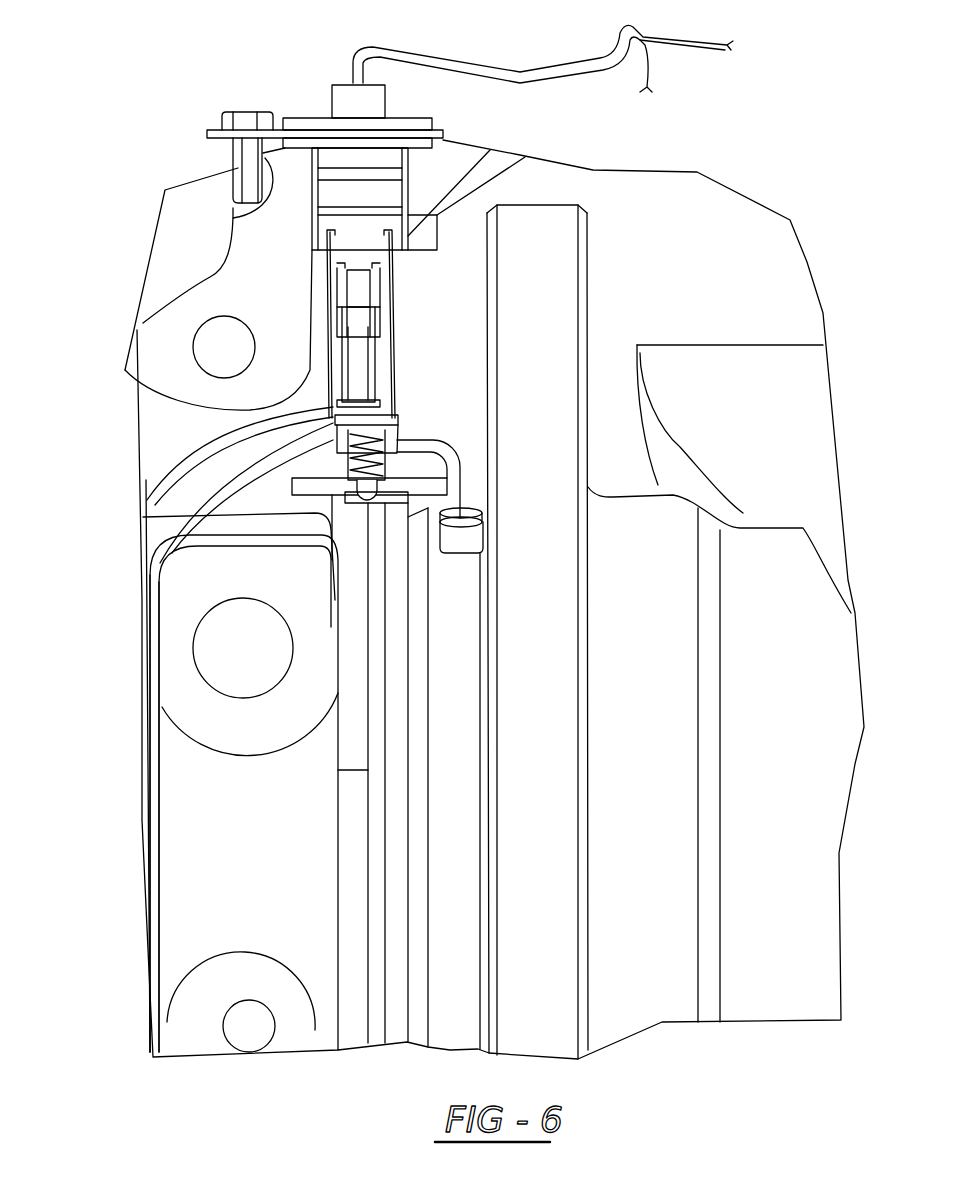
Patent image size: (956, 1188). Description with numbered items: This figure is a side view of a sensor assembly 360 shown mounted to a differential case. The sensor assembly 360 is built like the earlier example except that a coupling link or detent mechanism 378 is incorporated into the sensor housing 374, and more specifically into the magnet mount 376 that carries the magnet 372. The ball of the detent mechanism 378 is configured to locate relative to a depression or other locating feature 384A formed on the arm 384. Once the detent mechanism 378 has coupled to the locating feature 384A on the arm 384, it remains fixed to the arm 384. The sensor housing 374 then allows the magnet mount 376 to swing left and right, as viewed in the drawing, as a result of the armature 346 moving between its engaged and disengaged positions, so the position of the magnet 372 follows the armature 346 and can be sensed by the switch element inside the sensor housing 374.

The sensor assembly 360 is at (322, 267).
The sensor housing 374 is at (345, 348).
The magnet 372 is at (333, 412).
The magnet mount 376 is at (343, 440).
The detent mechanism 378 is at (332, 462).
The locating feature 384A is at (338, 505).
The arm 384 is at (401, 497).
The armature 346 is at (400, 662).